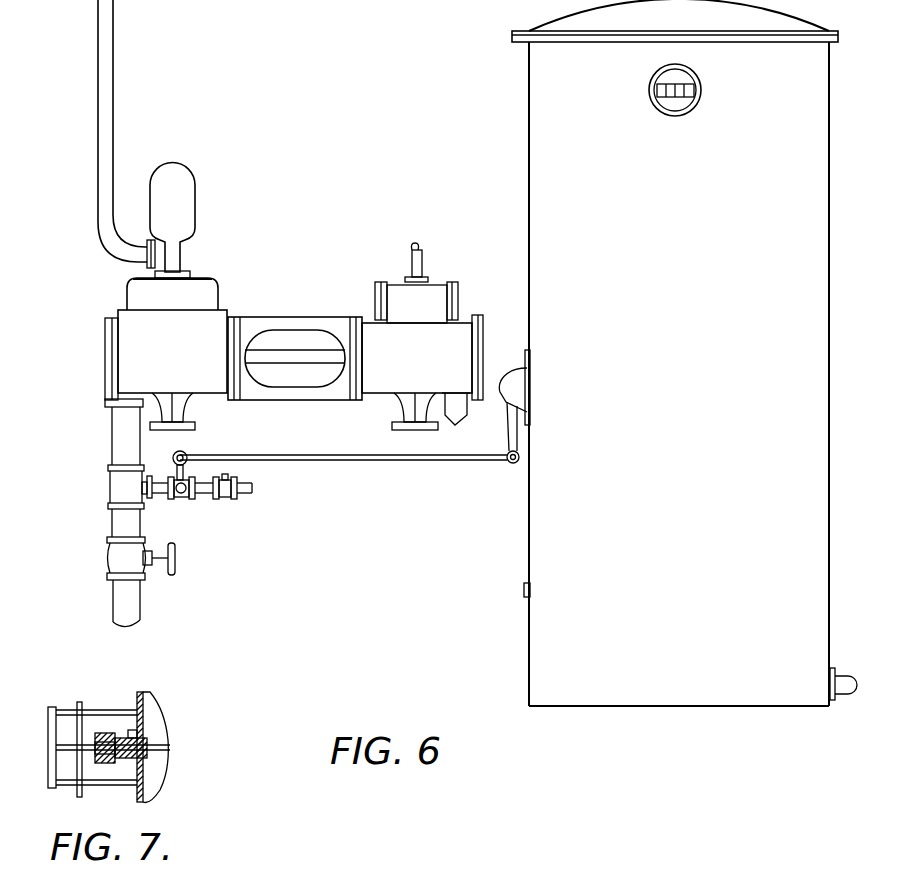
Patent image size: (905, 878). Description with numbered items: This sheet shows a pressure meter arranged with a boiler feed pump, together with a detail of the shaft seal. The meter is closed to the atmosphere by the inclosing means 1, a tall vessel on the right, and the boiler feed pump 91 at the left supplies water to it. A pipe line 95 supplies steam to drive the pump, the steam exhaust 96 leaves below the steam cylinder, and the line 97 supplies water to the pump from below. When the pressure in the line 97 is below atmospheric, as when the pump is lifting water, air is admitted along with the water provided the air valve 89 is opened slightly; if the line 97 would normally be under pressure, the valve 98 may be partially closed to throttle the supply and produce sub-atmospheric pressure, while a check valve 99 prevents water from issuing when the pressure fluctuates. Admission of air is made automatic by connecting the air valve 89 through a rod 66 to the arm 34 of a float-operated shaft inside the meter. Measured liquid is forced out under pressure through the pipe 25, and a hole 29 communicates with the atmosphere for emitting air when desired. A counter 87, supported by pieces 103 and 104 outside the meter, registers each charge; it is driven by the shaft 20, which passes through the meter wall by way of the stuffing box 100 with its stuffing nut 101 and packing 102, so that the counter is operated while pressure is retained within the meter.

In FIG. 6, the inclosing means 1 is at (528, 212).
In FIG. 7, the inclosing means 1 is at (137, 695).
In FIG. 6, the counter 87 is at (700, 105).
In FIG. 7, the counter 87 is at (48, 748).
In FIG. 6, the hole 29 is at (524, 586).
In FIG. 6, the pipe 25 is at (847, 690).
In FIG. 6, the arm 34 is at (512, 434).
In FIG. 6, the rod 66 is at (470, 462).
In FIG. 6, the air valve 89 is at (177, 491).
In FIG. 6, the check valve 99 is at (222, 488).
In FIG. 6, the line supplying water to the pump 97 is at (126, 515).
In FIG. 6, the valve 98 is at (132, 558).
In FIG. 6, the boiler feed pump 91 is at (205, 325).
In FIG. 6, the pipe line 95 is at (420, 262).
In FIG. 6, the steam exhaust 96 is at (452, 405).
In FIG. 7, the supporting piece 103 is at (110, 708).
In FIG. 7, the supporting piece 104 is at (122, 797).
In FIG. 7, the shaft 20 is at (168, 750).
In FIG. 7, the stuffing box 100 is at (122, 765).
In FIG. 7, the stuffing nut 101 is at (97, 757).
In FIG. 7, the packing 102 is at (105, 762).